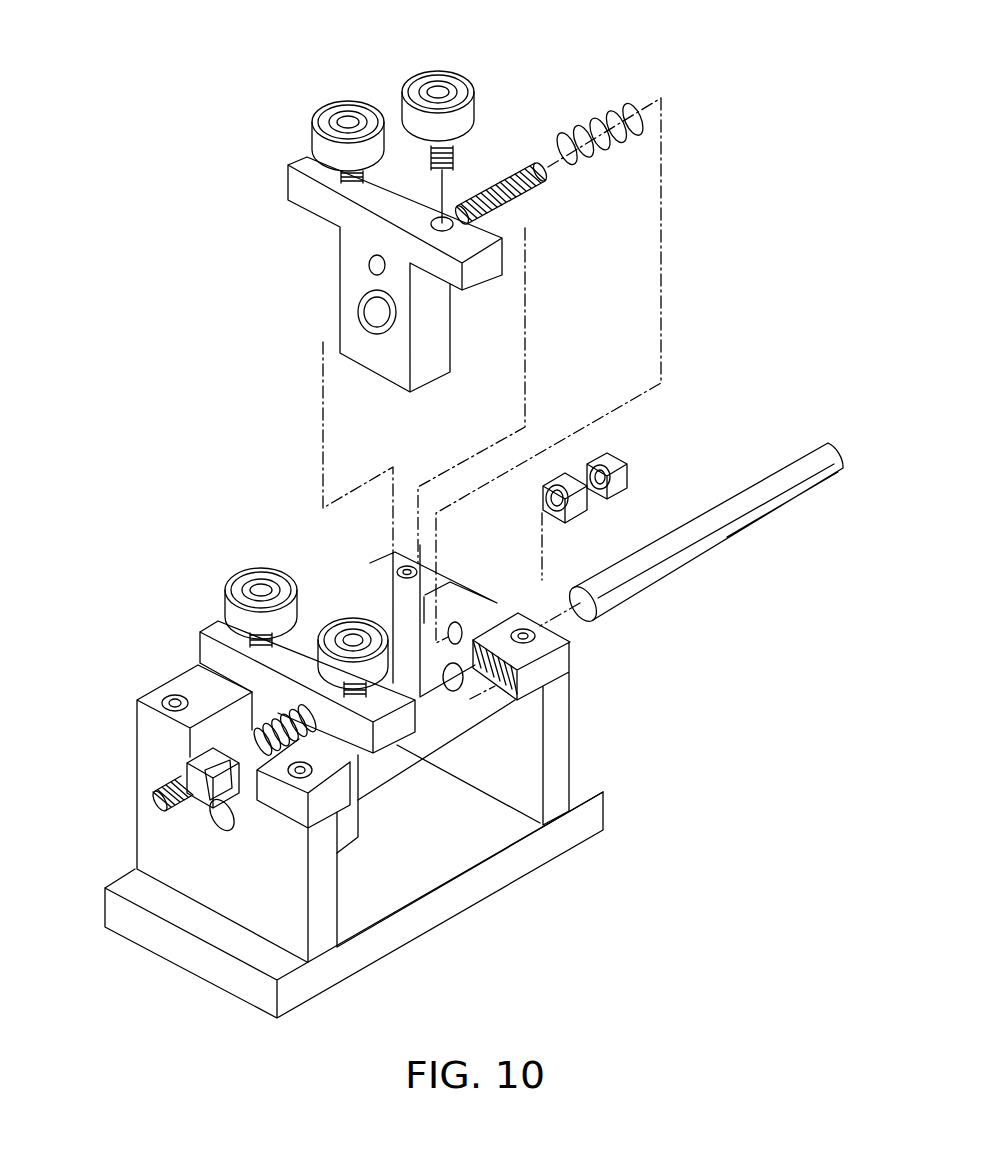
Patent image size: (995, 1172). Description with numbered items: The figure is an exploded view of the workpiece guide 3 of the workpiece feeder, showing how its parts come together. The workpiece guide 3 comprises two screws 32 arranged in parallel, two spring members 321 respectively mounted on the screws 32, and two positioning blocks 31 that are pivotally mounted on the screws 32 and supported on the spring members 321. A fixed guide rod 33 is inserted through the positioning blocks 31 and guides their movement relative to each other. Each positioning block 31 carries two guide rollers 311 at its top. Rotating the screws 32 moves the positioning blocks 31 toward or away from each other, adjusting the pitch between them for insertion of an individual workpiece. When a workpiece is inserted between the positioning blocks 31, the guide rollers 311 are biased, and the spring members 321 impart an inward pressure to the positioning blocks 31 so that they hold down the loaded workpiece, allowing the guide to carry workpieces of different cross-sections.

The workpiece guide 3 is at (672, 775).
The positioning block 31 is at (349, 243).
The guide roller 311 is at (323, 112).
The screw 32 is at (523, 167).
The spring member 321 is at (595, 117).
The fixed guide rod 33 is at (723, 510).